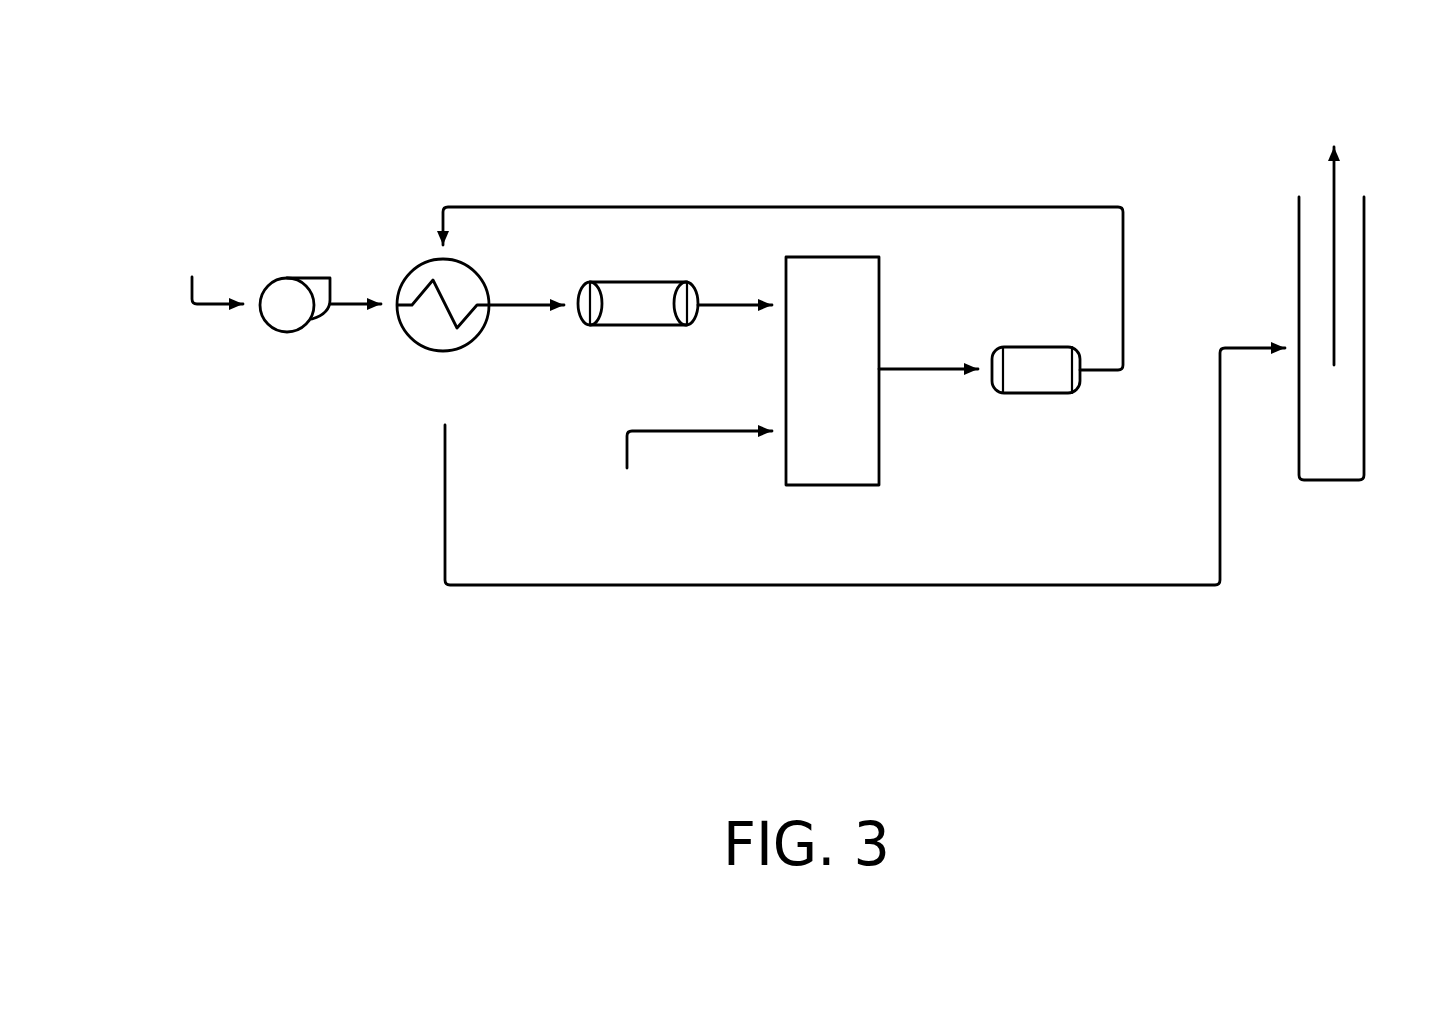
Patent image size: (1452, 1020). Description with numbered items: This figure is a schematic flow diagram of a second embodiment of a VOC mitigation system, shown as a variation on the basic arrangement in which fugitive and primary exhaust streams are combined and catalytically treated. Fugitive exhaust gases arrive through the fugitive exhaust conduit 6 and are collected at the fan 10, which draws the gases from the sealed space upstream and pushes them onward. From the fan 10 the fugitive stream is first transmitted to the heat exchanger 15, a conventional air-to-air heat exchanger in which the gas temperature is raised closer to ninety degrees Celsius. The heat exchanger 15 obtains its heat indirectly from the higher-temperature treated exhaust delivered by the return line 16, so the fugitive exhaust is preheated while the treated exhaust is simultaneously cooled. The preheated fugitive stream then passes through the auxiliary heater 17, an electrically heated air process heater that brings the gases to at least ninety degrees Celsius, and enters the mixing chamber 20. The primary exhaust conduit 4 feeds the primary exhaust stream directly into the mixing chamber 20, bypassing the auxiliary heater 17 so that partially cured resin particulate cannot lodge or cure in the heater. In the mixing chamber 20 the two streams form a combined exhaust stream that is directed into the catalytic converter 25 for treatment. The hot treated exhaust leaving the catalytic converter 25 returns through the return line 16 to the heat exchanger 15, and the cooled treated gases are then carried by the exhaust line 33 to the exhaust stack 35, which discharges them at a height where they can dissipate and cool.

The primary exhaust conduit 4 is at (627, 460).
The fugitive exhaust conduit 6 is at (189, 290).
The fan 10 is at (297, 278).
The heat exchanger 15 is at (487, 285).
The return line 16 is at (690, 207).
The auxiliary heater 17 is at (633, 282).
The mixing chamber 20 is at (879, 462).
The catalytic converter 25 is at (1028, 347).
The exhaust line 33 is at (903, 585).
The exhaust stack 35 is at (1364, 337).